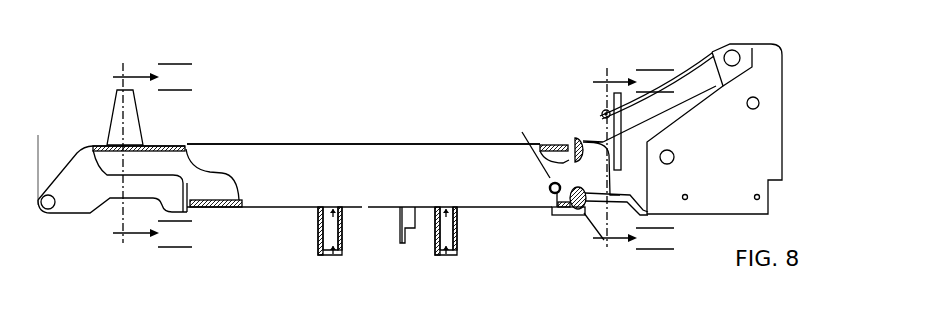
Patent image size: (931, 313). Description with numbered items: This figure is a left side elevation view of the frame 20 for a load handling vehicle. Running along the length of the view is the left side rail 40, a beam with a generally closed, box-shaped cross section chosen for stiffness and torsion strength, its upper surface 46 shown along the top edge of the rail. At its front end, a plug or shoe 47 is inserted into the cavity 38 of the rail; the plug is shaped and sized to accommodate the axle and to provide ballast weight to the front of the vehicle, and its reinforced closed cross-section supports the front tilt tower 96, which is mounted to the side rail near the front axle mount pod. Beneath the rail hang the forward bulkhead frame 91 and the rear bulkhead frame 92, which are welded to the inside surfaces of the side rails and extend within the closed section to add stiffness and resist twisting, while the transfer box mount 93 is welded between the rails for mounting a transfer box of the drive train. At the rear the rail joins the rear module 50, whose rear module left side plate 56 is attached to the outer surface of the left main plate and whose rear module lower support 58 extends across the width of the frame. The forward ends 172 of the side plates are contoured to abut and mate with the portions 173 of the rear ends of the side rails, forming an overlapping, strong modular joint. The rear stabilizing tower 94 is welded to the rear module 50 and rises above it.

The frame 20 is at (478, 126).
The cavity 38 is at (117, 163).
The left side rail 40 is at (320, 157).
The upper surface of rail 46 is at (260, 157).
The plug or shoe 47 is at (63, 180).
The rear module 50 is at (768, 115).
The rear module left side plate 56 is at (692, 76).
The rear module lower support 58 is at (714, 50).
The forward bulkhead frame 91 is at (334, 253).
The rear bulkhead frame 92 is at (445, 253).
The transfer box mount 93 is at (406, 243).
The rear stabilizing tower 94 is at (624, 116).
The front tilt tower 96 is at (134, 120).
The forward ends of the side plates 172 is at (614, 141).
The portions of the side rail rear ends 173 is at (572, 163).